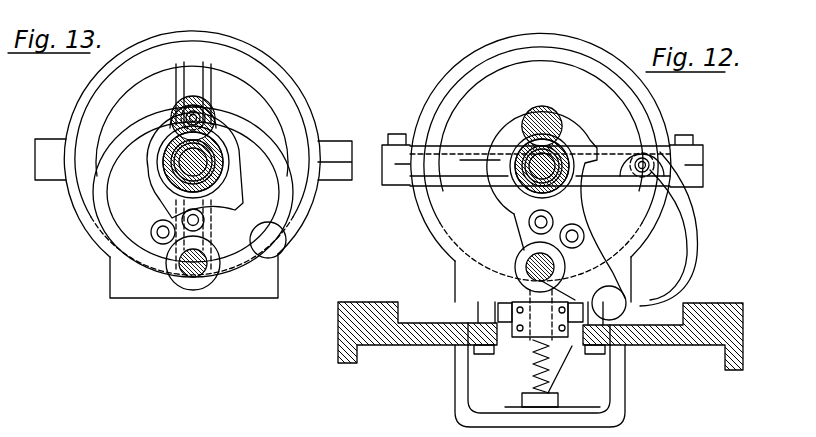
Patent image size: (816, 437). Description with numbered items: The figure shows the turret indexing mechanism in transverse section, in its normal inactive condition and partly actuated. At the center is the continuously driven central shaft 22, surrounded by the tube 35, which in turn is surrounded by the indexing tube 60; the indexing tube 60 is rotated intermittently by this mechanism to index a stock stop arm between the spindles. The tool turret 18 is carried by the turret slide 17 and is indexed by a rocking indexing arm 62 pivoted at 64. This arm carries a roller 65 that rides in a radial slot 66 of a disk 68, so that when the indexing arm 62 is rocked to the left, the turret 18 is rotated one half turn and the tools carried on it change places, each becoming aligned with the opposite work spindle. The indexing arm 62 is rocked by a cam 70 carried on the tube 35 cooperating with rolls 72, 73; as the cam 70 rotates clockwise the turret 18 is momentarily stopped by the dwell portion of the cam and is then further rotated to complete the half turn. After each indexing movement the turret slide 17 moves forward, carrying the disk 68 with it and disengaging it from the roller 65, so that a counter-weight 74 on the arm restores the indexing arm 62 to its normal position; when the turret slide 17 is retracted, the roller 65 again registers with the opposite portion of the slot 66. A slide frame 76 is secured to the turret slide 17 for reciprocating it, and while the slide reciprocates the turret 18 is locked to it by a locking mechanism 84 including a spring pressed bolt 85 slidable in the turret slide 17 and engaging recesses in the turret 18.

In FIG. 13, the turret slide 17 is at (109, 270).
In FIG. 12, the turret slide 17 is at (443, 253).
In FIG. 13, the tool turret 18 is at (86, 111).
In FIG. 12, the tool turret 18 is at (452, 222).
In FIG. 13, the central shaft 22 is at (193, 162).
In FIG. 12, the central shaft 22 is at (542, 166).
In FIG. 13, the tube 35 is at (168, 168).
In FIG. 12, the tube 35 is at (523, 143).
In FIG. 13, the indexing tube 60 is at (176, 175).
In FIG. 12, the indexing tube 60 is at (540, 135).
In FIG. 13, the rocking indexing arm 62 is at (256, 130).
In FIG. 12, the rocking indexing arm 62 is at (688, 250).
In FIG. 13, the pivot 64 is at (211, 254).
In FIG. 12, the pivot 64 is at (528, 250).
In FIG. 13, the roller 65 is at (210, 106).
In FIG. 12, the roller 65 is at (657, 147).
In FIG. 13, the radial slot 66 is at (197, 70).
In FIG. 12, the radial slot 66 is at (477, 170).
In FIG. 13, the disk 68 is at (262, 95).
In FIG. 12, the disk 68 is at (465, 105).
In FIG. 13, the cam 70 is at (234, 181).
In FIG. 12, the cam 70 is at (560, 133).
In FIG. 13, the roll 72 is at (152, 232).
In FIG. 12, the roll 72 is at (528, 220).
In FIG. 13, the roll 73 is at (205, 220).
In FIG. 12, the roll 73 is at (585, 233).
In FIG. 13, the counter-weight 74 is at (267, 227).
In FIG. 12, the counter-weight 74 is at (624, 300).
In FIG. 12, the slide frame 76 is at (497, 355).
In FIG. 12, the locking mechanism 84 is at (568, 367).
In FIG. 12, the spring pressed bolt 85 is at (536, 298).